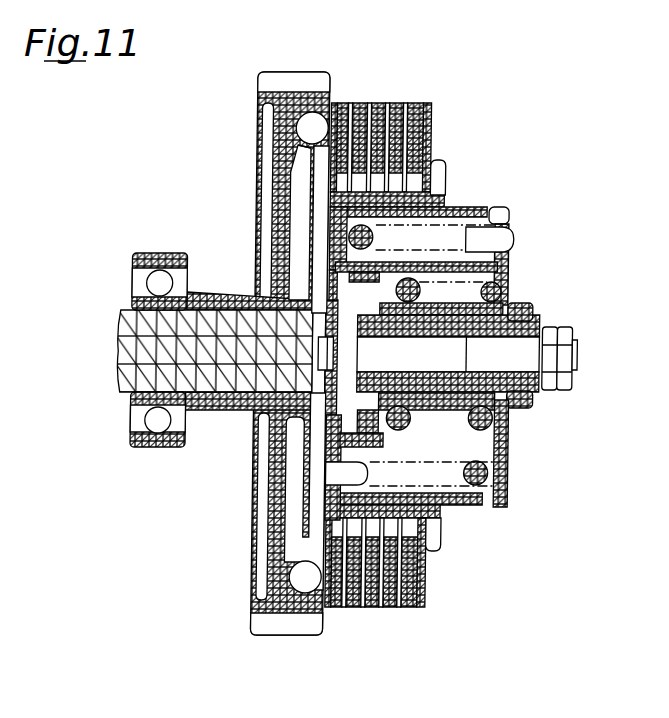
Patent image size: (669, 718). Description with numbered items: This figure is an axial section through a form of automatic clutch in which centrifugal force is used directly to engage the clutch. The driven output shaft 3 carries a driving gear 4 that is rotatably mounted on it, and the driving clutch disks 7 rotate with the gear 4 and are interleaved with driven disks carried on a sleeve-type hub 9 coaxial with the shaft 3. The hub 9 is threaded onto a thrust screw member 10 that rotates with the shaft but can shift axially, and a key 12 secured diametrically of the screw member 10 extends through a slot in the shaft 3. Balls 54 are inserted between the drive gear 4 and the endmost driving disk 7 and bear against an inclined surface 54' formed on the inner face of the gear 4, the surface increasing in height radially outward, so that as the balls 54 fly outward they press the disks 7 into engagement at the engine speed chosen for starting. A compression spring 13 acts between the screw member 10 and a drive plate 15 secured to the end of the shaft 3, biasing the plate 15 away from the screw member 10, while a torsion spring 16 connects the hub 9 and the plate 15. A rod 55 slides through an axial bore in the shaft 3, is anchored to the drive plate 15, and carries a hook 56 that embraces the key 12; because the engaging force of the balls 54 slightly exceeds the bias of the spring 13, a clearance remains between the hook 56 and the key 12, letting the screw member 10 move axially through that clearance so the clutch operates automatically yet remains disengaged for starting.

The output shaft 3 is at (134, 348).
The driving gear 4 is at (283, 113).
The driving clutch disks 7 is at (414, 115).
The hub 9 is at (332, 490).
The screw member 10 is at (330, 412).
The key 12 is at (336, 303).
The compression spring 13 is at (453, 293).
The drive plate 15 is at (506, 450).
The torsion spring 16 is at (440, 235).
The balls 54 is at (317, 356).
The inclined surface 54' is at (250, 167).
The rod 55 is at (504, 360).
The hook 56 is at (337, 355).